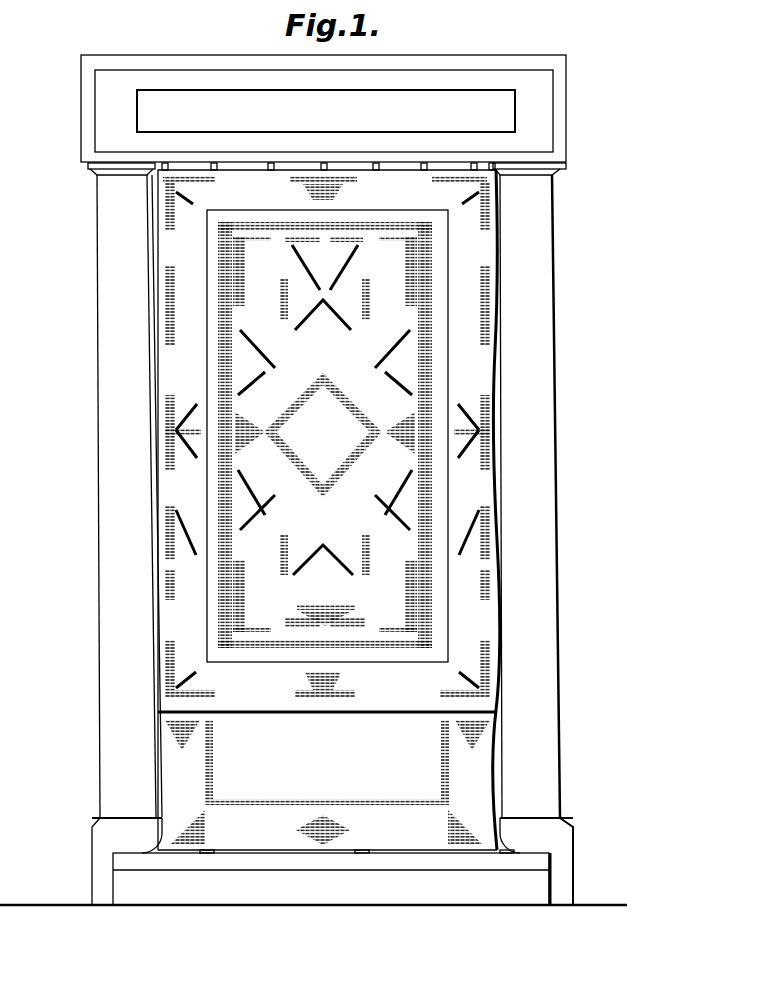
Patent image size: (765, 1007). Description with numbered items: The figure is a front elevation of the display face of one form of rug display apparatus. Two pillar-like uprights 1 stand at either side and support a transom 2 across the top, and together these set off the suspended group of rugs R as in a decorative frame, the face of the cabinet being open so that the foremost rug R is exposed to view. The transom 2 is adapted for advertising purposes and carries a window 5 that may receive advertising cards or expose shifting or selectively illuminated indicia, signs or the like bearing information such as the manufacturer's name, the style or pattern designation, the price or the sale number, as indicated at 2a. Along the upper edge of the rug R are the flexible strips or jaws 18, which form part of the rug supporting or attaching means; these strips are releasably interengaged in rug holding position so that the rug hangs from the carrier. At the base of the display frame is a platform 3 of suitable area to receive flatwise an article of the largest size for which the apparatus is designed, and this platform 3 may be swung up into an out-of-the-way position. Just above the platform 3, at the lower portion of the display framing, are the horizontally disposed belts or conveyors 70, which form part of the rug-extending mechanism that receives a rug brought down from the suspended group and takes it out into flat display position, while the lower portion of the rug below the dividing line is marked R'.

The pillar-like uprights 1 is at (100, 512).
The transom 2 is at (409, 64).
The indicia 2a is at (480, 113).
The window 5 is at (236, 97).
The flexible strips or jaws 18 is at (214, 167).
The belts or conveyors 70 is at (208, 853).
The platform 3 is at (280, 895).
The rugs R is at (372, 510).
The rug lower section R' is at (375, 785).